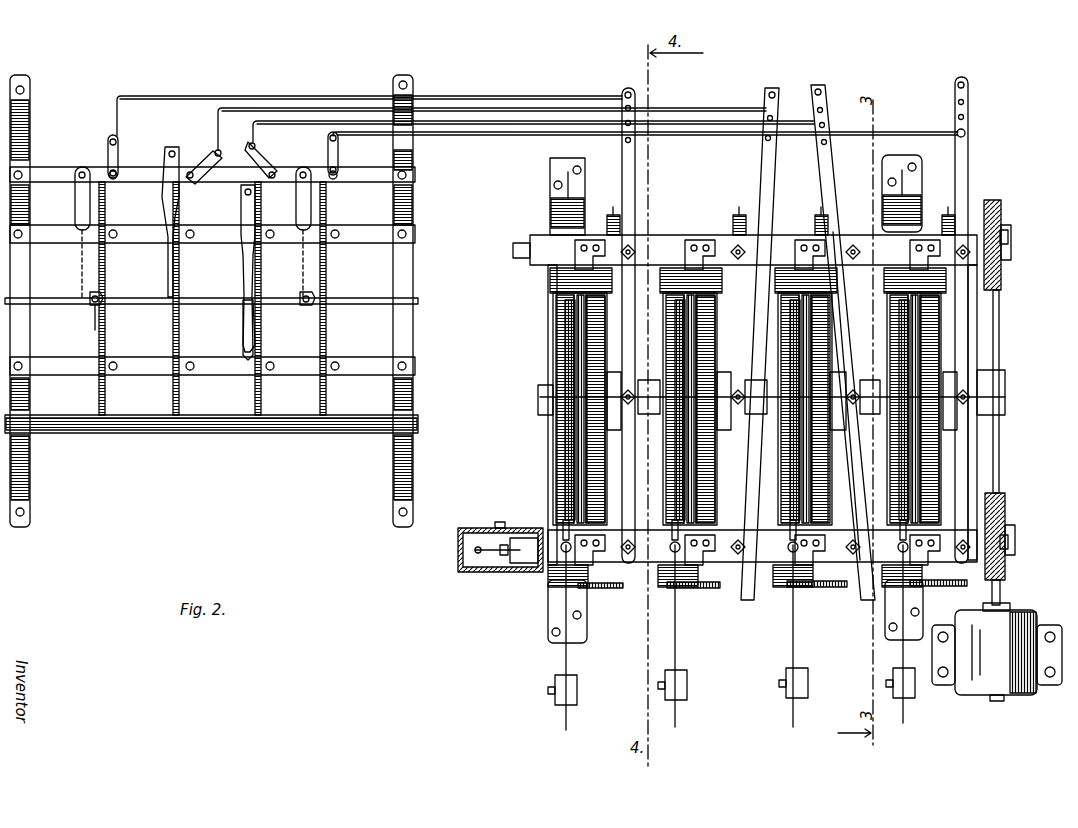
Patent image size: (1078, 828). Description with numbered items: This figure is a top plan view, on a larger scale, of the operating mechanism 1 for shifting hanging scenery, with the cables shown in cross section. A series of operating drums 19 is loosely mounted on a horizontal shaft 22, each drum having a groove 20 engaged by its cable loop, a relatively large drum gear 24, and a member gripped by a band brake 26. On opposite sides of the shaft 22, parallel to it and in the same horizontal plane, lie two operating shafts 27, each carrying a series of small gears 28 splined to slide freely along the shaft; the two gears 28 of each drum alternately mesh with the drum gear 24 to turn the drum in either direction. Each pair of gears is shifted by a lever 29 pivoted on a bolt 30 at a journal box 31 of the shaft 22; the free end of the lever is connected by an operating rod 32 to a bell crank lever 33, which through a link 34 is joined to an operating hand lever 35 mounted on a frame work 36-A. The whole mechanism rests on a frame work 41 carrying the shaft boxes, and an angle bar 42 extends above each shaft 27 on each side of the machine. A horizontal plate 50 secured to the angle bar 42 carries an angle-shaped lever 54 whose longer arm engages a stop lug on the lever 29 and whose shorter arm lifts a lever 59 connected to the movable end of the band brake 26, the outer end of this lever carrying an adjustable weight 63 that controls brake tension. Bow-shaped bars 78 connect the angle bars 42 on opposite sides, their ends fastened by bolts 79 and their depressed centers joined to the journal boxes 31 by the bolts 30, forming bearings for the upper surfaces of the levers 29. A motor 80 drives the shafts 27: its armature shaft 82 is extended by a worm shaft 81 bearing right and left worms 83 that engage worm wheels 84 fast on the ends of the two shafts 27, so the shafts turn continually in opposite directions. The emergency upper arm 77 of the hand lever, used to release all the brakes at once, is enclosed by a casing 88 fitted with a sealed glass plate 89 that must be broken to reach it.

The machine 1 is at (1024, 389).
The operating drum 19 is at (548, 405).
The groove 20 is at (575, 343).
The horizontal shaft 22 is at (538, 405).
The drum gear 24 is at (575, 328).
The band brake 26 is at (565, 420).
The operating shaft 27 is at (520, 244).
The gear 28 is at (845, 660).
The lever 29 is at (622, 156).
The bolt 30 is at (600, 425).
The journal box 31 is at (622, 397).
The operating rod 32 is at (722, 122).
The bell crank lever 33 is at (108, 150).
The link 34 is at (163, 165).
The operating hand lever 35 is at (100, 300).
The frame work 36-A is at (211, 301).
The frame work 41 is at (737, 195).
The angle bar 42 is at (816, 386).
The horizontal plate 50 is at (585, 560).
The angle-shaped lever 54 is at (772, 597).
The lever 59 is at (566, 655).
The adjustable weight 63 is at (578, 688).
The upper arm of hand lever 77 is at (485, 568).
The bow-shaped bar 78 is at (660, 285).
The bolt 79 is at (637, 248).
The motor 80 is at (978, 675).
The worm shaft 81 is at (1000, 468).
The armature shaft 82 is at (1002, 595).
The worm 83 is at (1011, 255).
The worm wheel 84 is at (1002, 213).
The casing 88 is at (492, 515).
The glass plate 89 is at (512, 570).